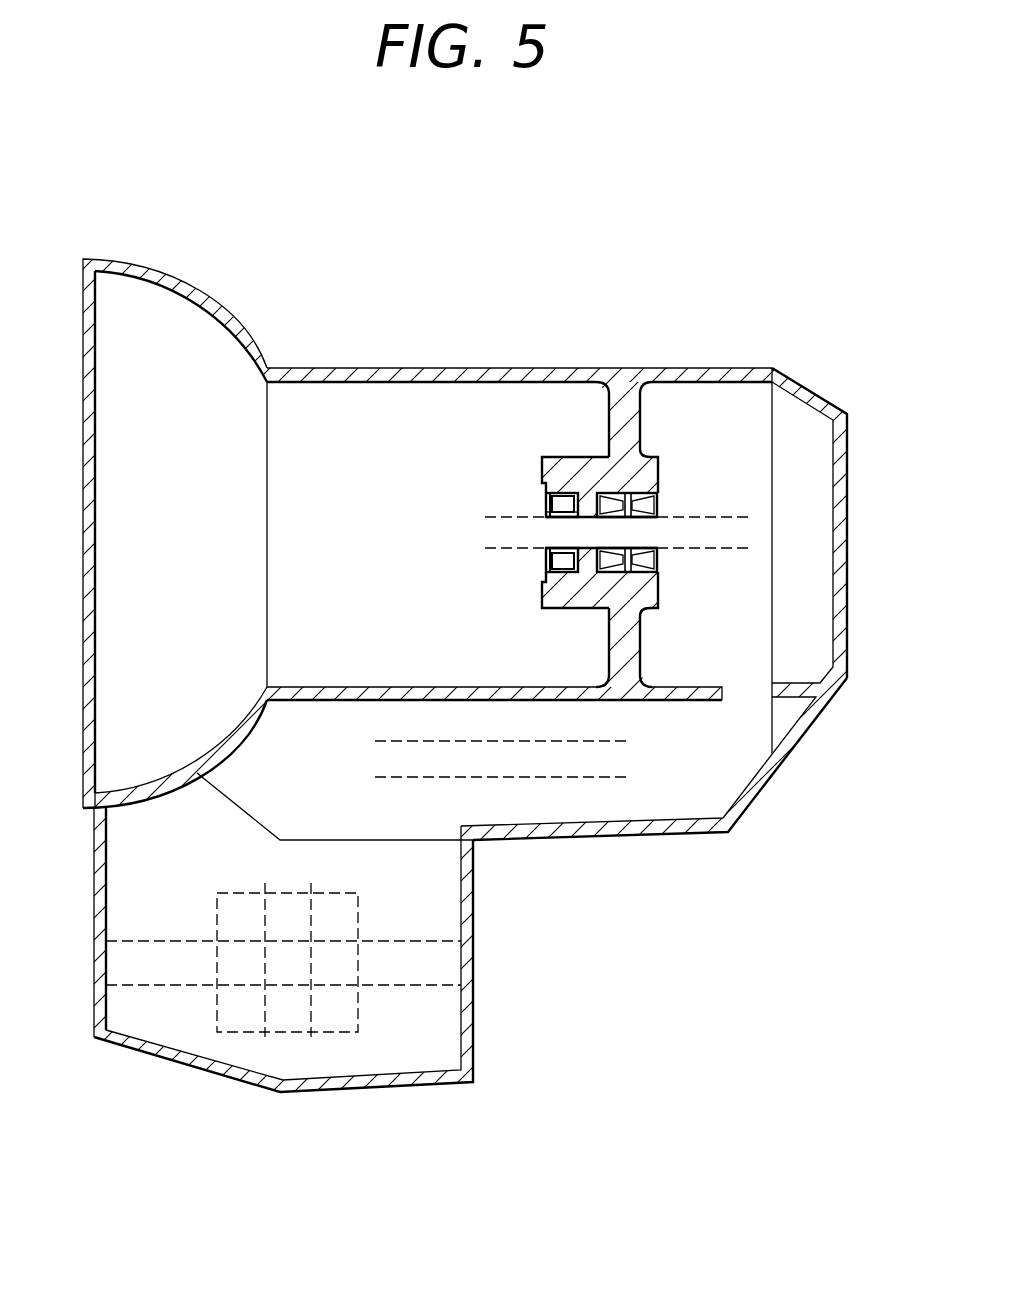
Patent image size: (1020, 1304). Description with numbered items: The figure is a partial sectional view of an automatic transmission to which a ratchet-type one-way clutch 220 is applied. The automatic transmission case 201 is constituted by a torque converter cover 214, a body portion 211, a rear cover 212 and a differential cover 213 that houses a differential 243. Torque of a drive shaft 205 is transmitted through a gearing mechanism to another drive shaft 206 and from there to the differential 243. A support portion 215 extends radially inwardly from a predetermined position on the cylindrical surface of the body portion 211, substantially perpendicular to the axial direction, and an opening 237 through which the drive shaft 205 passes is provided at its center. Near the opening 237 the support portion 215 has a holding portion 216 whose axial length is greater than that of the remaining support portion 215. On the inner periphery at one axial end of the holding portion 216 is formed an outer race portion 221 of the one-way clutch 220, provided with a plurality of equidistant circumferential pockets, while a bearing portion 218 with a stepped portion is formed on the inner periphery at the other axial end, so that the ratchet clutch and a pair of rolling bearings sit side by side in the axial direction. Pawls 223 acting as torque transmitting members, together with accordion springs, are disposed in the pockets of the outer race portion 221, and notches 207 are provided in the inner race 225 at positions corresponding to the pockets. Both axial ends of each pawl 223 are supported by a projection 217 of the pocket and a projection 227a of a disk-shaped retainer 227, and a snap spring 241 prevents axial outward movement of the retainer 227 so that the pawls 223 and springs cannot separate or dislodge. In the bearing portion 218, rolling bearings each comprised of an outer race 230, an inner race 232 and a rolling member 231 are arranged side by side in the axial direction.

The automatic transmission case 201 is at (352, 226).
The drive shaft 205 is at (731, 549).
The drive shaft 206 is at (631, 778).
The notches 207 is at (640, 645).
The body portion 211 is at (324, 366).
The rear cover 212 is at (812, 400).
The differential cover 213 is at (420, 1083).
The torque converter cover 214 is at (129, 262).
The support portion 215 is at (612, 420).
The holding portion 216 is at (605, 466).
The projection 217 is at (577, 492).
The bearing portion 218 is at (648, 604).
The one-way clutch 220 is at (531, 608).
The outer race portion 221 is at (566, 590).
The pawls 223 is at (537, 489).
The inner race 225 is at (546, 515).
The retainer 227 is at (543, 497).
The projection 227a is at (541, 505).
The outer race 230 is at (643, 492).
The rolling member 231 is at (659, 494).
The inner race 232 is at (660, 510).
The opening 237 is at (746, 534).
The snap spring 241 is at (543, 576).
The differential 243 is at (236, 1034).